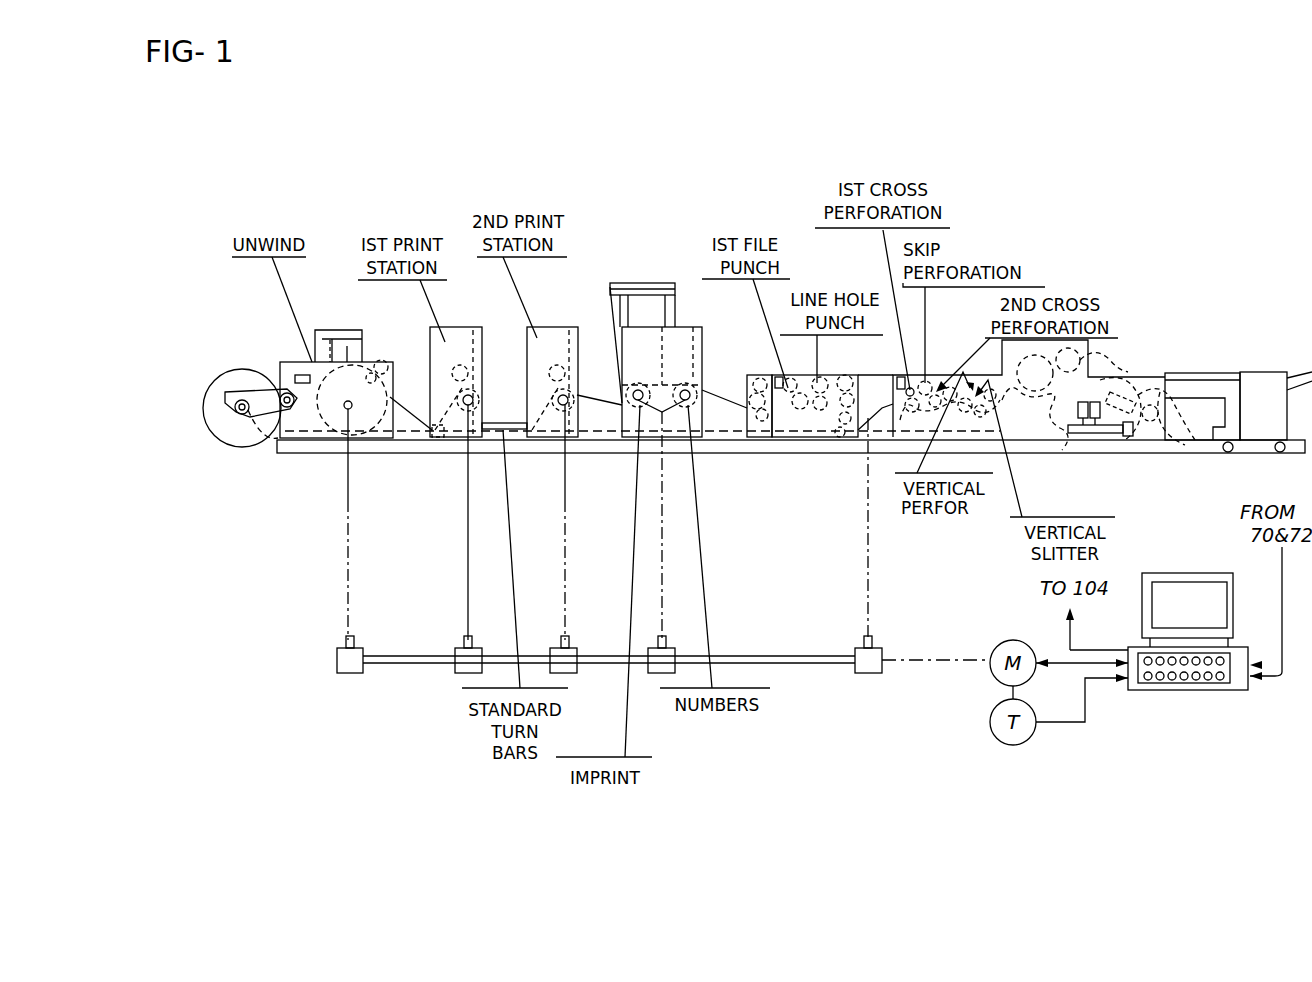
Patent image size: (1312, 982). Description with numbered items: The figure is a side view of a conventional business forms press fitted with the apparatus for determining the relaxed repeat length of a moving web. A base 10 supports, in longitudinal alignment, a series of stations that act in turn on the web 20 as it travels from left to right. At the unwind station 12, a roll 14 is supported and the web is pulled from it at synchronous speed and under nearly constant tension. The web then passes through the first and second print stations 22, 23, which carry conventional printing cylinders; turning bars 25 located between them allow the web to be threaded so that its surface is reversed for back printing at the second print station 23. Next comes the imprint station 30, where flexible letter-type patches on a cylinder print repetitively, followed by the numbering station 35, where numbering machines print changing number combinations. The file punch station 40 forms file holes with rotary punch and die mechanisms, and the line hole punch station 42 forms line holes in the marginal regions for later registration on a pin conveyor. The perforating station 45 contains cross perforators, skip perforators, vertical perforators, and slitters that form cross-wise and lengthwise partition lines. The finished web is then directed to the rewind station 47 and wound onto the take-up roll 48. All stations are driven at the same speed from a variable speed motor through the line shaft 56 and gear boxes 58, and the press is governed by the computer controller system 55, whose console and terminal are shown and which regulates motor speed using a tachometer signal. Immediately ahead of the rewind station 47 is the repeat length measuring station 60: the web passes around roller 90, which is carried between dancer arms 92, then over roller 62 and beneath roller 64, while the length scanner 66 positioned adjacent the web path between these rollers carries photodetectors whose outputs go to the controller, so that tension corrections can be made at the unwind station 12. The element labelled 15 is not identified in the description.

The base 10 is at (642, 463).
The unwind station 12 is at (311, 457).
The roll 14 is at (228, 434).
The unwind arm 15 is at (238, 400).
The web 20 is at (412, 398).
The first print station 22 is at (482, 322).
The second print station 23 is at (562, 322).
The turning bars 25 is at (503, 418).
The imprint station 30 is at (606, 392).
The numbering station 35 is at (710, 388).
The file punch station 40 is at (760, 362).
The line hole punch station 42 is at (834, 370).
The perforating station 45 is at (940, 360).
The rewind station 47 is at (1216, 360).
The take-up roll 48 is at (1199, 440).
The computer controller system 55 is at (1168, 696).
The line shaft 56 is at (800, 655).
The gear boxes 58 is at (467, 658).
The repeat length measuring station 60 is at (1112, 368).
The roller 62 is at (1139, 420).
The roller 64 is at (1136, 392).
The length scanner 66 is at (1150, 406).
The roller 90 is at (1065, 432).
The dancer arms 92 is at (1092, 432).